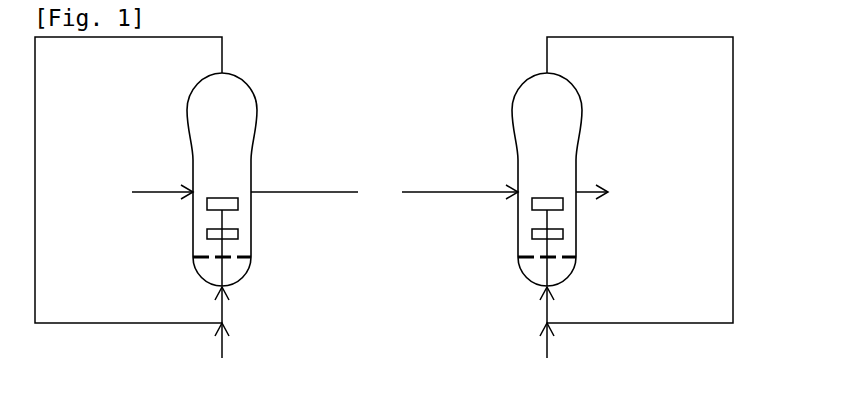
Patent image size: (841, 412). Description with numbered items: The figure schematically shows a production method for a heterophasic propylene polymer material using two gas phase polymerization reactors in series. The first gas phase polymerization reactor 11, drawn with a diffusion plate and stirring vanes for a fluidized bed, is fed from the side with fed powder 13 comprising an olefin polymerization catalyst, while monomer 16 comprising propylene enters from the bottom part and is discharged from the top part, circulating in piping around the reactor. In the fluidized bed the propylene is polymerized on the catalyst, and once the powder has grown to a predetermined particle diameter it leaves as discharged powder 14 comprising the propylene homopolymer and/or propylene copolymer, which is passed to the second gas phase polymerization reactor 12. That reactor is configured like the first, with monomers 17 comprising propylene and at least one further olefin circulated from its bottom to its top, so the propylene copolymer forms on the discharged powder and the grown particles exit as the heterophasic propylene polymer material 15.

The gas phase polymerization reactor 11 is at (238, 104).
The gas phase polymerization reactor 12 is at (563, 104).
The fed powder 13 is at (143, 194).
The discharged powder comprising the propylene homopolymer and/or the propylene copo 14 is at (384, 193).
The heterophasic propylene polymer material 15 is at (610, 194).
The monomer(s) comprising propylene 16 is at (222, 339).
The monomers 17 is at (547, 339).